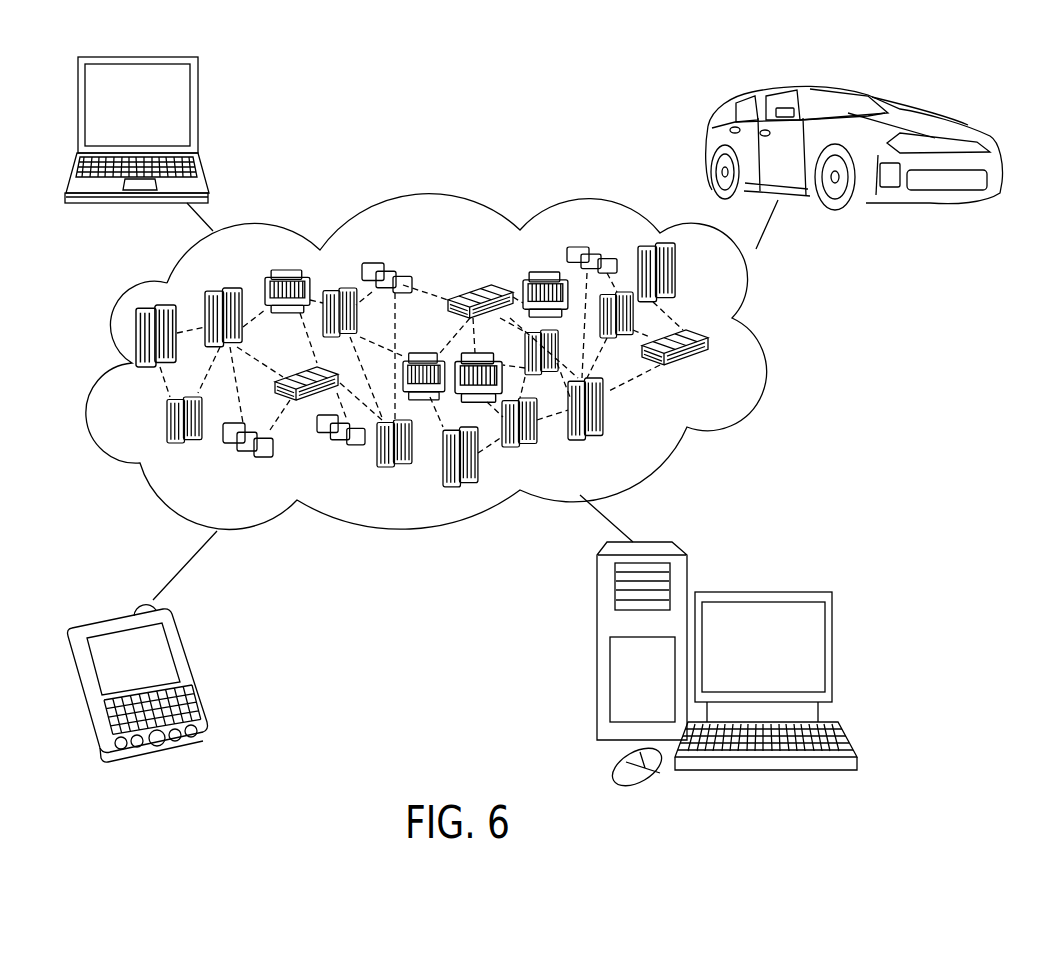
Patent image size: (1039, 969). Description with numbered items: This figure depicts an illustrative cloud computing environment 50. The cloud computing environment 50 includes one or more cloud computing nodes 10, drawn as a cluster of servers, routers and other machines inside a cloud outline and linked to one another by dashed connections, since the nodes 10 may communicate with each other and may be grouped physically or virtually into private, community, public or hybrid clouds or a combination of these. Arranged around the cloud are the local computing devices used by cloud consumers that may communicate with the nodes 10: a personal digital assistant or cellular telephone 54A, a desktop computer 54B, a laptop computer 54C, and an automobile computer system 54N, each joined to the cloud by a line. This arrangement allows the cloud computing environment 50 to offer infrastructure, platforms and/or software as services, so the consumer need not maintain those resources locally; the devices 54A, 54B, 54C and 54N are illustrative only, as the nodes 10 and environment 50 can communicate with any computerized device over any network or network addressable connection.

The cloud computing node 10 is at (725, 372).
The cloud computing environment 50 is at (776, 355).
The personal digital assistant or cellular telephone 54A is at (188, 668).
The desktop computer 54B is at (793, 590).
The laptop computer 54C is at (200, 122).
The automobile computer system 54N is at (913, 105).